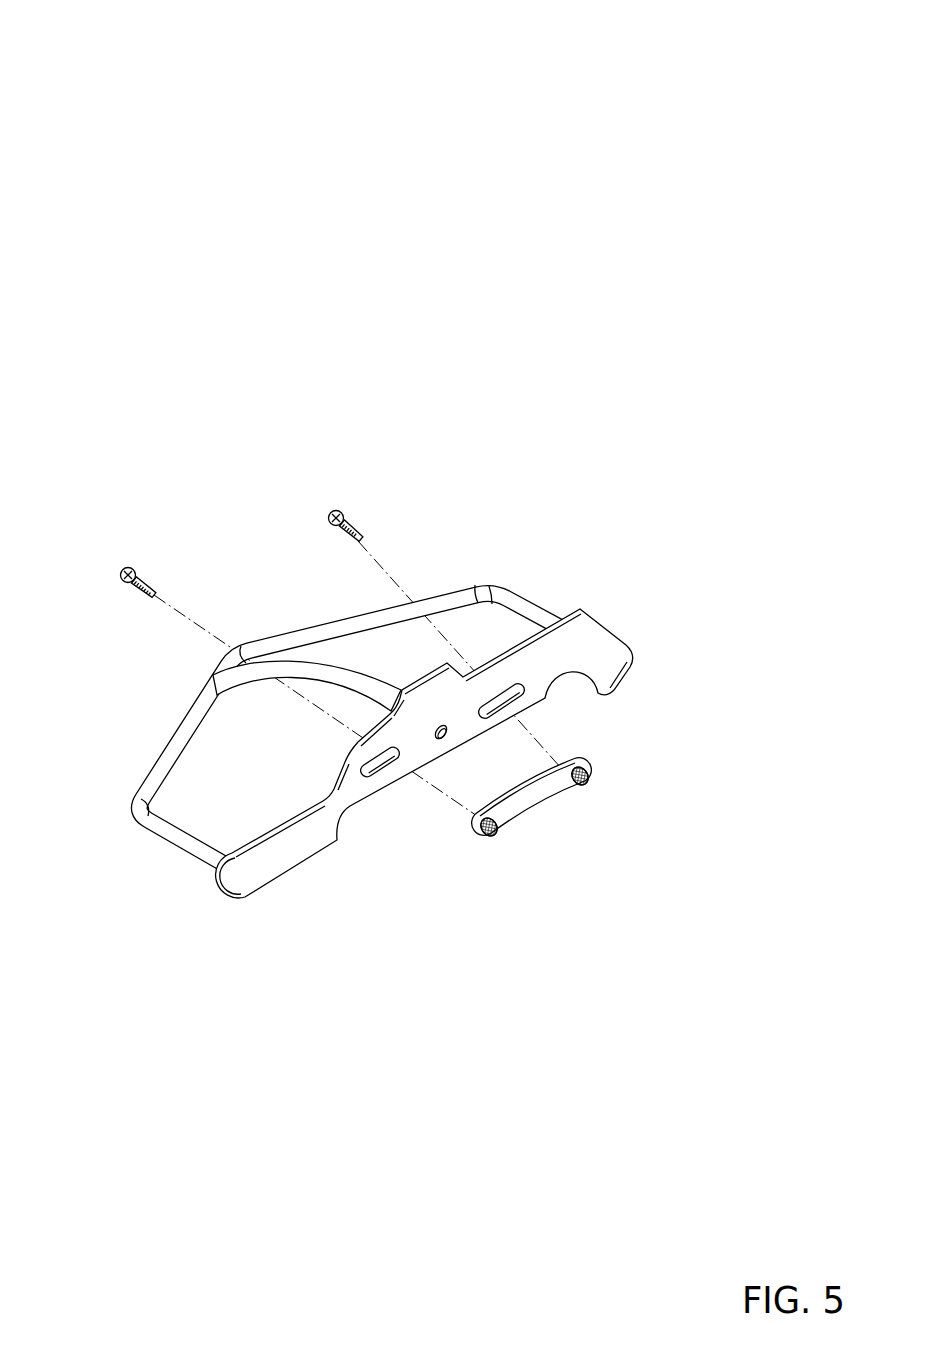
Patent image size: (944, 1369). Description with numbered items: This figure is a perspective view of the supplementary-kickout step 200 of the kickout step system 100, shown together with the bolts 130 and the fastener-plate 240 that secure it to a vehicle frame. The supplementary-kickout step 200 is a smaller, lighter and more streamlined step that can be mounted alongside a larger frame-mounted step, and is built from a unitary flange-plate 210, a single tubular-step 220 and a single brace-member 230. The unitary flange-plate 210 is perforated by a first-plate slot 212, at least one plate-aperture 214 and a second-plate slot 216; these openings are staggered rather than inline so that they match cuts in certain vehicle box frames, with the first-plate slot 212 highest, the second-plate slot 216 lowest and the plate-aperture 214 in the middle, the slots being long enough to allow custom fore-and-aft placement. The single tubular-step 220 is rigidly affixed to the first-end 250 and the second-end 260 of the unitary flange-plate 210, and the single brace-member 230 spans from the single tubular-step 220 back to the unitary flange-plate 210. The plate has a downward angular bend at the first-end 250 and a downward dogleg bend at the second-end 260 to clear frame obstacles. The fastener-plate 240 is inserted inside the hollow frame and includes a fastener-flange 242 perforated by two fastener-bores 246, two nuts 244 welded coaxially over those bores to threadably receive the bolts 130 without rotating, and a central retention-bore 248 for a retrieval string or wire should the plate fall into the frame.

The kickout step system 100 is at (675, 86).
The bolts 130 is at (119, 576).
The supplementary-kickout step 200 is at (446, 744).
The unitary flange-plate 210 is at (448, 780).
The first-plate slot 212 is at (523, 695).
The plate-aperture 214 is at (445, 735).
The second-plate slot 216 is at (364, 782).
The single tubular-step 220 is at (530, 597).
The single brace-member 230 is at (313, 667).
The fastener-plate 240 is at (546, 849).
The fastener-flange 242 is at (550, 785).
The nuts 244 is at (495, 833).
The fastener-bores 246 is at (586, 783).
The retention-bore 248 is at (513, 815).
The first-end 250 is at (640, 660).
The second-end 260 is at (228, 895).